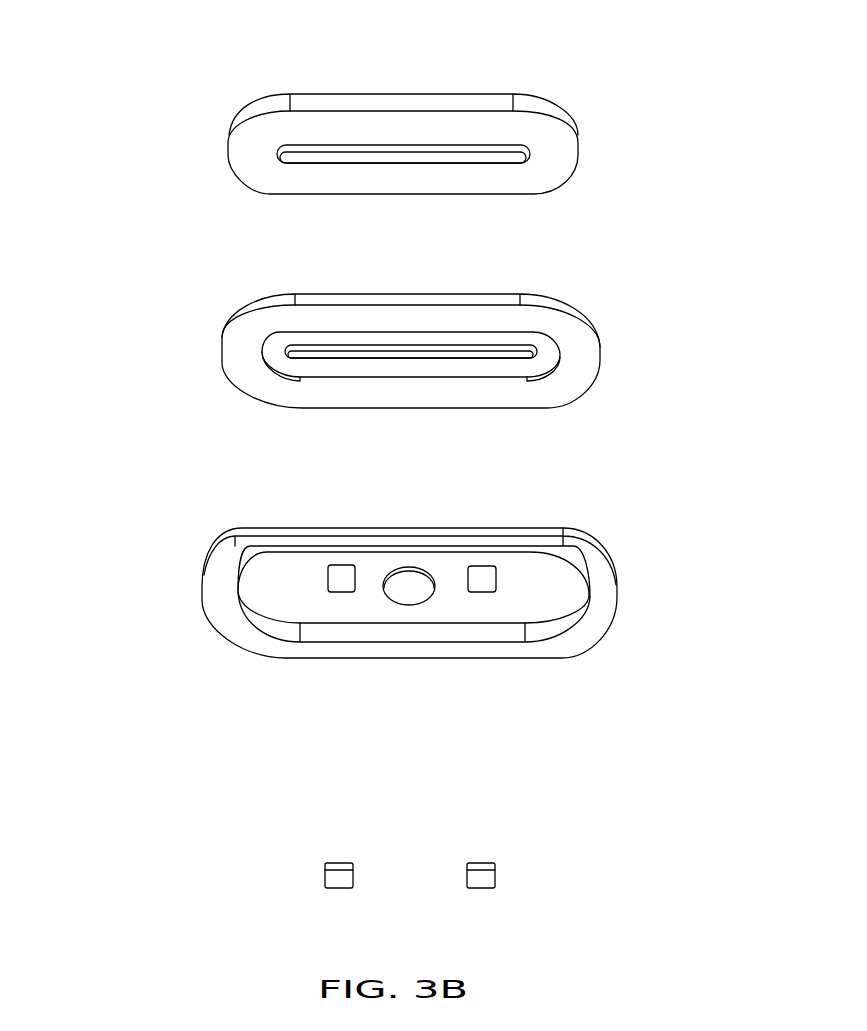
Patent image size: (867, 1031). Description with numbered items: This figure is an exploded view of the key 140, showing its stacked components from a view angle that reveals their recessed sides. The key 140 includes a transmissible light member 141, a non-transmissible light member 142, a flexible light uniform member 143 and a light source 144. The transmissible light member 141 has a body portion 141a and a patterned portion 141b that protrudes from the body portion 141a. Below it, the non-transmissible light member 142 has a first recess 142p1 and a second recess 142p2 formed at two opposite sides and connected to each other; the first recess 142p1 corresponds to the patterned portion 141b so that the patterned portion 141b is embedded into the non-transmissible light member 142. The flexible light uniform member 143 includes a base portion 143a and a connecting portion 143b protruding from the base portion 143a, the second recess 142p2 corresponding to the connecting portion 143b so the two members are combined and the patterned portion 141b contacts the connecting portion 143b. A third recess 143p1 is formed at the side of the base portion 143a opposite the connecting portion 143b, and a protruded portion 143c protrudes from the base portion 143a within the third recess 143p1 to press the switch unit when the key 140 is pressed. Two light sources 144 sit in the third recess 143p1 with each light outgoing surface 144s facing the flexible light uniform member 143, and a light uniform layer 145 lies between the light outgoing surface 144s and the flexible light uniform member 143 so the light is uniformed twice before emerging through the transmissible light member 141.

The key 140 is at (707, 31).
The transmissible light member 141 is at (197, 147).
The body portion 141a is at (450, 102).
The patterned portion 141b is at (360, 145).
The non-transmissible light member 142 is at (191, 340).
The first recess 142p1 is at (418, 347).
The second recess 142p2 is at (338, 385).
The flexible light uniform member 143 is at (172, 587).
The base portion 143a is at (604, 560).
The connecting portion 143b is at (540, 525).
The third recess 143p1 is at (288, 616).
The protruded portion 143c is at (407, 592).
The light uniform layer 145 is at (342, 565).
The light source 144 is at (323, 867).
The light outgoing surface 144s is at (347, 845).